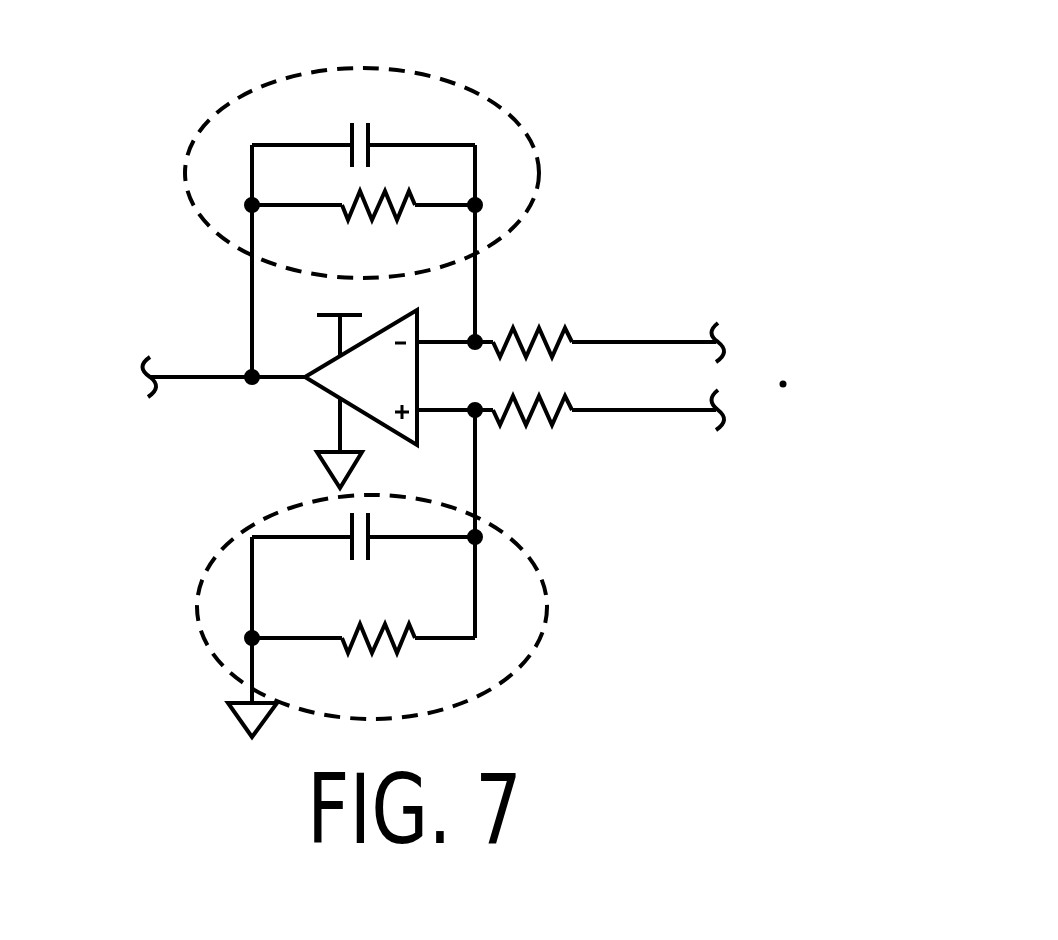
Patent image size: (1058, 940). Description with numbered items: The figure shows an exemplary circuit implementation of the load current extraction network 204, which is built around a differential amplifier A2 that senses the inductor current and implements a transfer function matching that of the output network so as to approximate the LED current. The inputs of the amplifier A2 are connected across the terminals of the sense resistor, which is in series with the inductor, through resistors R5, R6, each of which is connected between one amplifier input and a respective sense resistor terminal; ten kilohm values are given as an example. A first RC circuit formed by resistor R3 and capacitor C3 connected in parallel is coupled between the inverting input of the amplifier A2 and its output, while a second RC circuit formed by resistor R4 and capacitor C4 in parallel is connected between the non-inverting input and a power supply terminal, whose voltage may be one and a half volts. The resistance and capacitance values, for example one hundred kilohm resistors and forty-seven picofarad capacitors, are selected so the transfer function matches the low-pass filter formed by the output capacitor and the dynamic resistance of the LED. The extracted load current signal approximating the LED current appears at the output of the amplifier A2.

The load current extraction network 204 is at (118, 170).
The capacitor C3 is at (363, 115).
The resistor R3 is at (363, 238).
The differential amplifier A2 is at (361, 399).
The resistor R5 is at (570, 312).
The resistor R6 is at (570, 439).
The capacitor C4 is at (363, 568).
The resistor R4 is at (363, 674).